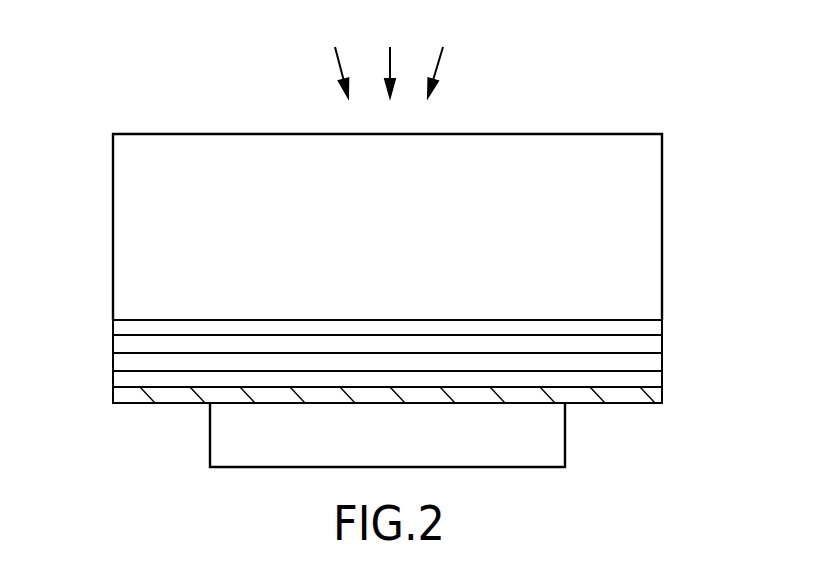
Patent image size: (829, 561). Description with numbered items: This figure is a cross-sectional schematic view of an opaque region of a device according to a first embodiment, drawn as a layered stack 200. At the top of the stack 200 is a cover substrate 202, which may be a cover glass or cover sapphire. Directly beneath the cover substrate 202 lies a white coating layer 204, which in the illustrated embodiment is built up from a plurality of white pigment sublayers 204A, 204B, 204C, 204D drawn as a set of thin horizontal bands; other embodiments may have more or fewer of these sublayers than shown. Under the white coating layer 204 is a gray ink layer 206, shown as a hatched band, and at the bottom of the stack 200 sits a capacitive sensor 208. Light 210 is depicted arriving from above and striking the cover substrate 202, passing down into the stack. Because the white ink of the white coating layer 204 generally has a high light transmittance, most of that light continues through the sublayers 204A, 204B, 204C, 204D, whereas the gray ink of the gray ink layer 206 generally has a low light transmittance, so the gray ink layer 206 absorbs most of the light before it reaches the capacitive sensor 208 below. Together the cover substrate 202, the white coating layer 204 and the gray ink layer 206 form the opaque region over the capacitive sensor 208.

The stack 200 is at (396, 238).
The cover substrate 202 is at (405, 268).
The white coating layer 204 is at (407, 362).
The white pigment sublayer 204A is at (662, 327).
The white pigment sublayer 204B is at (662, 344).
The white pigment sublayer 204C is at (662, 362).
The white pigment sublayer 204D is at (662, 379).
The gray ink layer 206 is at (117, 396).
The capacitive sensor 208 is at (405, 461).
The light 210 is at (438, 38).